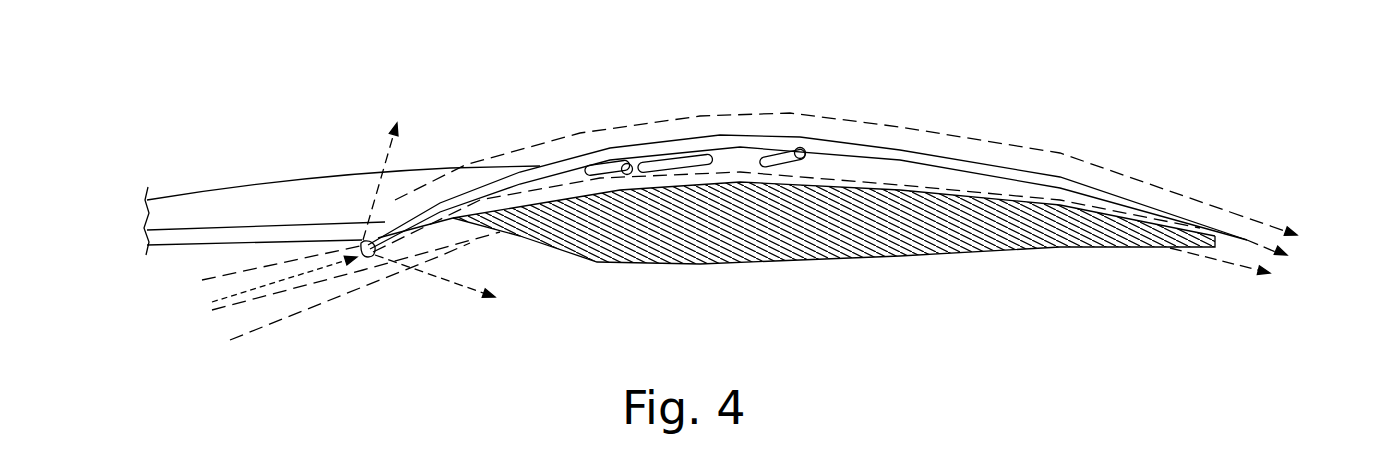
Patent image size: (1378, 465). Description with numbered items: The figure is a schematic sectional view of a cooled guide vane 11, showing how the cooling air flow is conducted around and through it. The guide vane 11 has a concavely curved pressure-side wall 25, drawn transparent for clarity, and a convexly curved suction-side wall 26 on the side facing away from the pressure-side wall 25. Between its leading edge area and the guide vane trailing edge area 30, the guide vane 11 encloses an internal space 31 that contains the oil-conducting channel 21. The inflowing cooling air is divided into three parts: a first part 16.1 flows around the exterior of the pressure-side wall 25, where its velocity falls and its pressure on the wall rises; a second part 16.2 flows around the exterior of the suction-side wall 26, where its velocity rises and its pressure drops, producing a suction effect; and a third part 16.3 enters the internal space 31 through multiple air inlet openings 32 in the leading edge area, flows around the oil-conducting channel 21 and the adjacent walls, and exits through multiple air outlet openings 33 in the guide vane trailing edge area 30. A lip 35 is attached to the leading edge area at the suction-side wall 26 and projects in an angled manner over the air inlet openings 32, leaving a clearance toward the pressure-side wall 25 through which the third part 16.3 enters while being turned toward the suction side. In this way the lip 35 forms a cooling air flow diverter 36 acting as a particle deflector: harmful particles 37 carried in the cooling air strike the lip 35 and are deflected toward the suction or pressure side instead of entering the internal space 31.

The guide vane 11 is at (221, 176).
The first part of the cooling air flow 16.1 is at (295, 325).
The second part of the cooling air flow 16.2 is at (580, 133).
The third part of the cooling air flow 16.3 is at (223, 312).
The oil-conducting channel 21 is at (692, 152).
The pressure-side wall 25 is at (765, 263).
The suction-side wall 26 is at (972, 157).
The guide vane trailing edge area 30 is at (1232, 213).
The internal space 31 is at (835, 166).
The air inlet openings 32 is at (376, 250).
The air outlet openings 33 is at (1250, 238).
The lip 35 is at (375, 258).
The cooling air flow diverter 36 is at (367, 268).
The harmful particles 37 is at (275, 282).